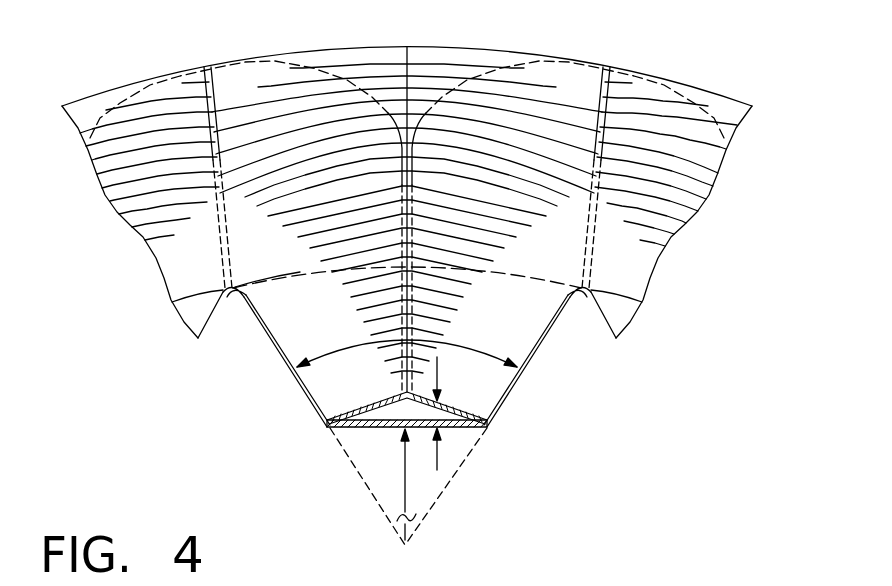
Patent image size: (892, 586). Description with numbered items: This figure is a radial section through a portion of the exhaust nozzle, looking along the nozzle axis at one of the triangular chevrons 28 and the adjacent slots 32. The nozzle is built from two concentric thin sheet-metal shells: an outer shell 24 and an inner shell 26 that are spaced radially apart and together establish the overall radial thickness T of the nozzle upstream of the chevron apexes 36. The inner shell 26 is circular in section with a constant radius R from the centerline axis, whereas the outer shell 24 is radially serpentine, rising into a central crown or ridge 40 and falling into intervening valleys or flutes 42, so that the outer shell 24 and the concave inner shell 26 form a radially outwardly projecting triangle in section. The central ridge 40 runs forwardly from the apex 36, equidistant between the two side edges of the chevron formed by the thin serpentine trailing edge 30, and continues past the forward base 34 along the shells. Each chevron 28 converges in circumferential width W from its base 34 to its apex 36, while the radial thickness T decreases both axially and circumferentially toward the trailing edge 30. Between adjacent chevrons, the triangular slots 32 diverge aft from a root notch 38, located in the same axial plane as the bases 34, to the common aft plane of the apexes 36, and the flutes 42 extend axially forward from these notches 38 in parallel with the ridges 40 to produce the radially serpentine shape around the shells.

The outer shell 24 is at (97, 118).
The inner shell 26 is at (357, 436).
The chevron 28 is at (507, 314).
The trailing edge 30 is at (514, 388).
The slot 32 is at (250, 337).
The base 34 is at (507, 273).
The apex 36 is at (400, 545).
The root notch 38 is at (228, 297).
The central ridge 40 is at (402, 313).
The flute 42 is at (223, 257).
The radius R is at (403, 477).
The radial thickness T is at (438, 372).
The circumferential width W is at (467, 347).